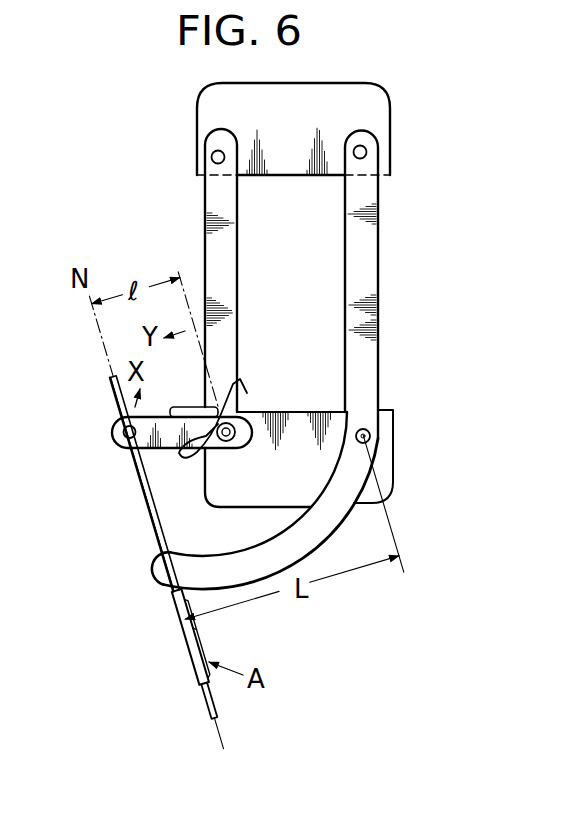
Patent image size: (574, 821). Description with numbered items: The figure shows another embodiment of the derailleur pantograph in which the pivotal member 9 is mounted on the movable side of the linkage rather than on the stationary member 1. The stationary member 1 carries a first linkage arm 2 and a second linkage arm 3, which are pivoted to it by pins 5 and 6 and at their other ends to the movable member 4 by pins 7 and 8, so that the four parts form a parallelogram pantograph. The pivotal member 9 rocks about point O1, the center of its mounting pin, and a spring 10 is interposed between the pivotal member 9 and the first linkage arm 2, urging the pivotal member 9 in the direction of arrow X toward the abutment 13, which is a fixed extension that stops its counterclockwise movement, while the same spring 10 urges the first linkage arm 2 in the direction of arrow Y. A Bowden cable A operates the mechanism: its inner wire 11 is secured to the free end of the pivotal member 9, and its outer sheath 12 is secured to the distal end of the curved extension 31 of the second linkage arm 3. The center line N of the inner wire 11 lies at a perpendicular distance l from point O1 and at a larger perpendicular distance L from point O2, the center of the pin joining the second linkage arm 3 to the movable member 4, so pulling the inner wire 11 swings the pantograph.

The stationary member 1 is at (362, 110).
The first linkage arm 2 is at (226, 247).
The second linkage arm 3 is at (366, 240).
The movable member 4 is at (393, 468).
The pin 5 is at (211, 157).
The pin 6 is at (367, 151).
The pin 7 is at (206, 460).
The pin 8 is at (371, 433).
The pivotal member 9 is at (140, 456).
The spring 10 is at (180, 454).
The inner wire 11 is at (205, 697).
The outer sheath 12 is at (187, 647).
The abutment 13 is at (182, 403).
The extension 31 is at (162, 571).
The center of pin O1 is at (231, 423).
The center of pin O2 is at (358, 428).